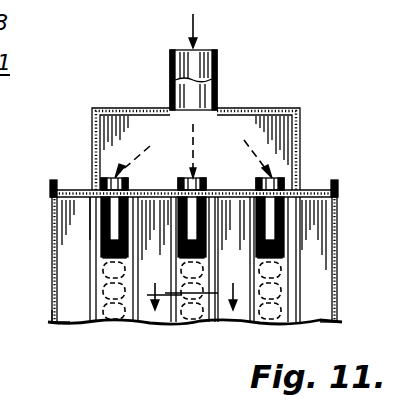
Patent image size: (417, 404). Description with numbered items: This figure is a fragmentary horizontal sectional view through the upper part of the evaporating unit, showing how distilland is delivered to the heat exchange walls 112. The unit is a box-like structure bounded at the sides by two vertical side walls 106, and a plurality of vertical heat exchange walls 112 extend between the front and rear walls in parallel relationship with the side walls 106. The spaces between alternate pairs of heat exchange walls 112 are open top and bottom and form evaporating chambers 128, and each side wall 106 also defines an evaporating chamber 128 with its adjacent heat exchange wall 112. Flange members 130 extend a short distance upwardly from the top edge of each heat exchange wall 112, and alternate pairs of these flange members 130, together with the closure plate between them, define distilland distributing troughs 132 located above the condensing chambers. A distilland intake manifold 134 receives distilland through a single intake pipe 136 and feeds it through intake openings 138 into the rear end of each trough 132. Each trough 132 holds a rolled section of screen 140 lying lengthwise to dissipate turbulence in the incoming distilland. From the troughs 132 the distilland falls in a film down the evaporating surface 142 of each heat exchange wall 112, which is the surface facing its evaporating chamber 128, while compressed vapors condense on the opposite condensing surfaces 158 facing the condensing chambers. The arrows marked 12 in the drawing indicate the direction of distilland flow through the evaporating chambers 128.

The flow direction arrows 12 is at (197, 284).
The vertical side wall 106 is at (52, 302).
The heat exchange wall 112 is at (128, 328).
The evaporating chamber 128 is at (317, 315).
The flange member 130 is at (238, 184).
The distilland distributing trough 132 is at (187, 327).
The distilland intake manifold 134 is at (263, 108).
The intake pipe 136 is at (219, 53).
The intake opening 138 is at (133, 180).
The section of screen 140 is at (95, 232).
The evaporating surface 142 is at (65, 327).
The condensing surface 158 is at (100, 273).